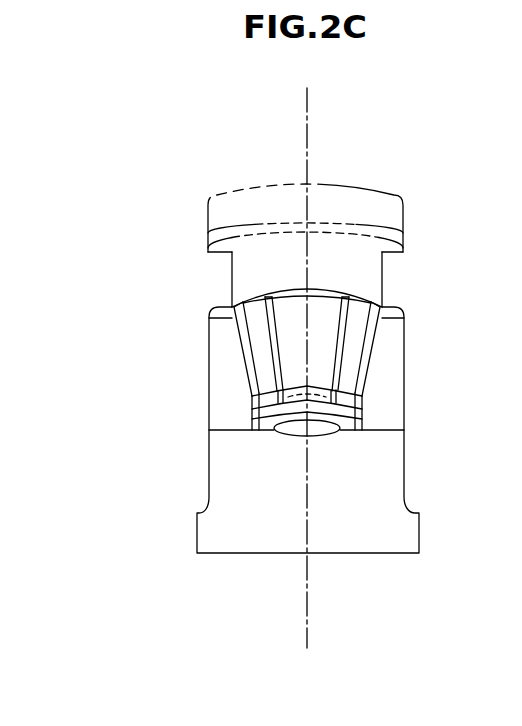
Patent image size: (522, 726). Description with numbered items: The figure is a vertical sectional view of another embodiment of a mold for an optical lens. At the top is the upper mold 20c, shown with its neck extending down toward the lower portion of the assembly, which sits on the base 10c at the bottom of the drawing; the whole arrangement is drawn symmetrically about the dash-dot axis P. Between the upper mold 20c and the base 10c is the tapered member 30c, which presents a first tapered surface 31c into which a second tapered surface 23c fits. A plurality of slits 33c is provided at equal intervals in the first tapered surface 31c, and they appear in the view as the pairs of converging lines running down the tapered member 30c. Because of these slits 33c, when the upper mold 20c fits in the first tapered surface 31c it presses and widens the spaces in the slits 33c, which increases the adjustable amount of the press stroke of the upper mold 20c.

The upper mold 20c is at (342, 186).
The holder body 10c is at (375, 545).
The collet 30c is at (221, 330).
The slits 33c is at (233, 307).
The first tapered surface 31c is at (248, 348).
The second tapered surface 23c is at (245, 370).
The center axis P is at (308, 485).